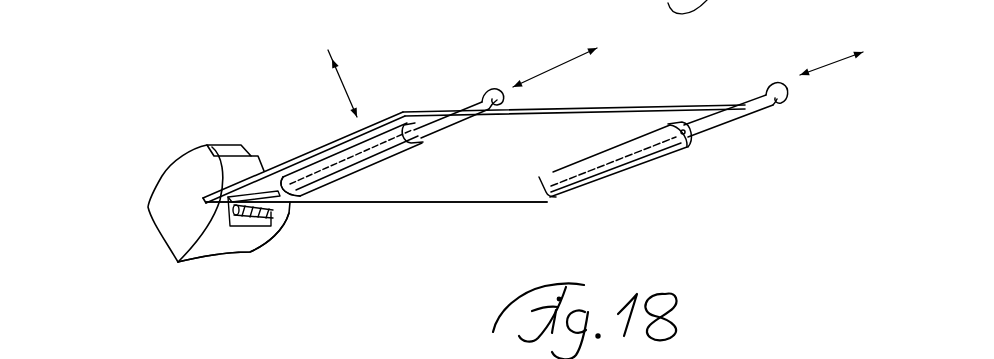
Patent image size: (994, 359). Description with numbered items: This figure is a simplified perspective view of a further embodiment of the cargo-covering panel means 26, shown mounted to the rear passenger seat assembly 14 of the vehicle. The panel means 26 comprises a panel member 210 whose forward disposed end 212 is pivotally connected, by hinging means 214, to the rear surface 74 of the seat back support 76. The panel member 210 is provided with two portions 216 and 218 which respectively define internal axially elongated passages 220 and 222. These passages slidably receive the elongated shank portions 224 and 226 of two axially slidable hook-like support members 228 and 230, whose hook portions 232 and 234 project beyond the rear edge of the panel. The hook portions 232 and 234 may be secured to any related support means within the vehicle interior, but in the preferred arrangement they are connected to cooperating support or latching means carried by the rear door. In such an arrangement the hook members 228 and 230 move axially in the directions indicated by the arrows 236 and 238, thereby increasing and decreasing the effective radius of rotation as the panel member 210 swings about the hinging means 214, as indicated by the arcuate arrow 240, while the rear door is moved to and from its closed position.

The rear passenger seat assembly 14 is at (159, 170).
The rear surface of seat back 74 is at (210, 228).
The seat back support 76 is at (226, 146).
The panel means 26 is at (598, 108).
The forward end of panel member 212 is at (383, 190).
The hinging means 214 is at (253, 222).
The panel member 210 is at (381, 111).
The passage-defining portion 216 is at (313, 180).
The passage-defining portion 218 is at (597, 170).
The axially elongated passage 220 is at (417, 138).
The axially elongated passage 222 is at (690, 138).
The shank portion 224 is at (447, 121).
The shank portion 226 is at (722, 126).
The hook-like support member 228 is at (462, 95).
The hook-like support member 230 is at (740, 88).
The hook portion 232 is at (494, 112).
The hook portion 234 is at (777, 106).
The arrow 236 is at (549, 70).
The arrow 238 is at (827, 65).
The arcuate arrow 240 is at (341, 78).